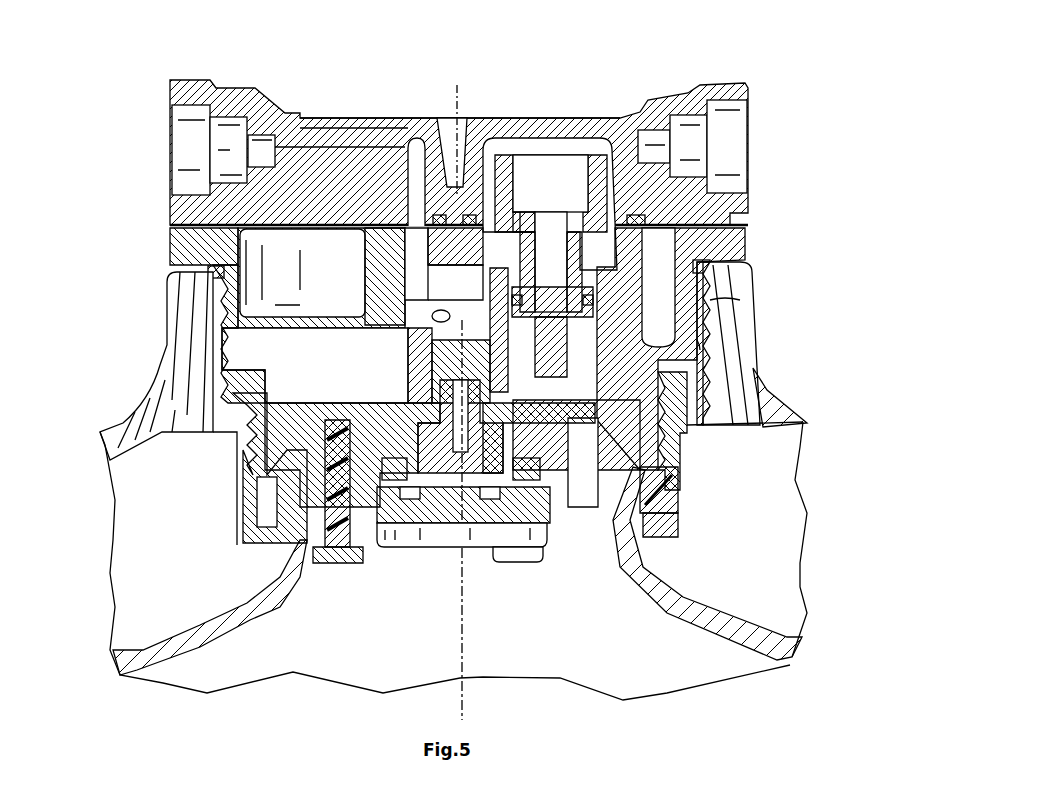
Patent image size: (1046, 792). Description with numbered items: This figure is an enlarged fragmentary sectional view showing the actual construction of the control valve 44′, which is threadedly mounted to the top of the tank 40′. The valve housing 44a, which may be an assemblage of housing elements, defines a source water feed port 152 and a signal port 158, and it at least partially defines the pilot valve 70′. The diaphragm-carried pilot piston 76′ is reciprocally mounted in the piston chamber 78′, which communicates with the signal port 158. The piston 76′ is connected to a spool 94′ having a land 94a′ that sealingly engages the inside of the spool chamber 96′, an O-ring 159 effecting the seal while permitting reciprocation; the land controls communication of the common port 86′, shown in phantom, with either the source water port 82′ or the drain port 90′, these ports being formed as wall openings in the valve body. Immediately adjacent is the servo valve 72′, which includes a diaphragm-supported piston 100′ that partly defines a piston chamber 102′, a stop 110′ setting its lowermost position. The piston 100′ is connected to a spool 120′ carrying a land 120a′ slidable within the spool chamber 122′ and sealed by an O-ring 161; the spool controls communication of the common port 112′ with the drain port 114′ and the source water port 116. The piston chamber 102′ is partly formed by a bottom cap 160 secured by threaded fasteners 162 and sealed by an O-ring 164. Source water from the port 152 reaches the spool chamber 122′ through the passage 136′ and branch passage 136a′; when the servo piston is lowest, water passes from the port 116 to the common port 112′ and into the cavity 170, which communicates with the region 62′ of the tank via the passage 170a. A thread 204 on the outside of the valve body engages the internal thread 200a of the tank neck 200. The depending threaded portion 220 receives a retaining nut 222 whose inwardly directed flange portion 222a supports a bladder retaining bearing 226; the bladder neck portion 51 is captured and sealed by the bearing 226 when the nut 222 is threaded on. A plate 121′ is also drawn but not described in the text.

The control valve 44′ is at (706, 72).
The valve housing 44a is at (338, 133).
The source water feed port 152 is at (188, 105).
The passage 136′ is at (416, 160).
The branch passage 136a′ is at (436, 165).
The piston chamber 78′ is at (490, 150).
The pilot valve 70′ is at (600, 140).
The pilot piston 76′ is at (550, 183).
The source water port 82′ is at (500, 258).
The common port 86′ is at (560, 290).
The signal port 158 is at (740, 112).
The source water port 116 is at (413, 277).
The spool chamber 122′ is at (420, 317).
The cavity 170 is at (315, 365).
The thread 204 is at (214, 283).
The neck 200 is at (735, 300).
The passage 170a is at (222, 397).
The tank 40′ is at (122, 412).
The region 62′ is at (203, 488).
The neck portion 51 is at (280, 480).
The internal thread 200a is at (752, 340).
The spool 94′ is at (707, 285).
The land 94a′ is at (715, 303).
The O-ring 159 is at (700, 340).
The inwardly directed flange portion 222a is at (647, 530).
The drain port 90′ is at (528, 390).
The O-ring 164 is at (574, 502).
The threaded portion 220 is at (680, 437).
The retaining nut 222 is at (678, 487).
The bladder retaining bearing 226 is at (680, 518).
The spool chamber 96′ is at (530, 328).
The O-ring 161 is at (492, 387).
The plate 121′ is at (445, 345).
The land 120a′ is at (438, 330).
The common port 112′ is at (405, 355).
The servo valve 72′ is at (432, 392).
The spool 120′ is at (420, 402).
The drain port 114′ is at (415, 410).
The servo piston 100′ is at (408, 500).
The stop 110′ is at (455, 483).
The piston chamber 102′ is at (492, 487).
The bottom cap 160 is at (545, 533).
The threaded fastener 162 is at (333, 560).